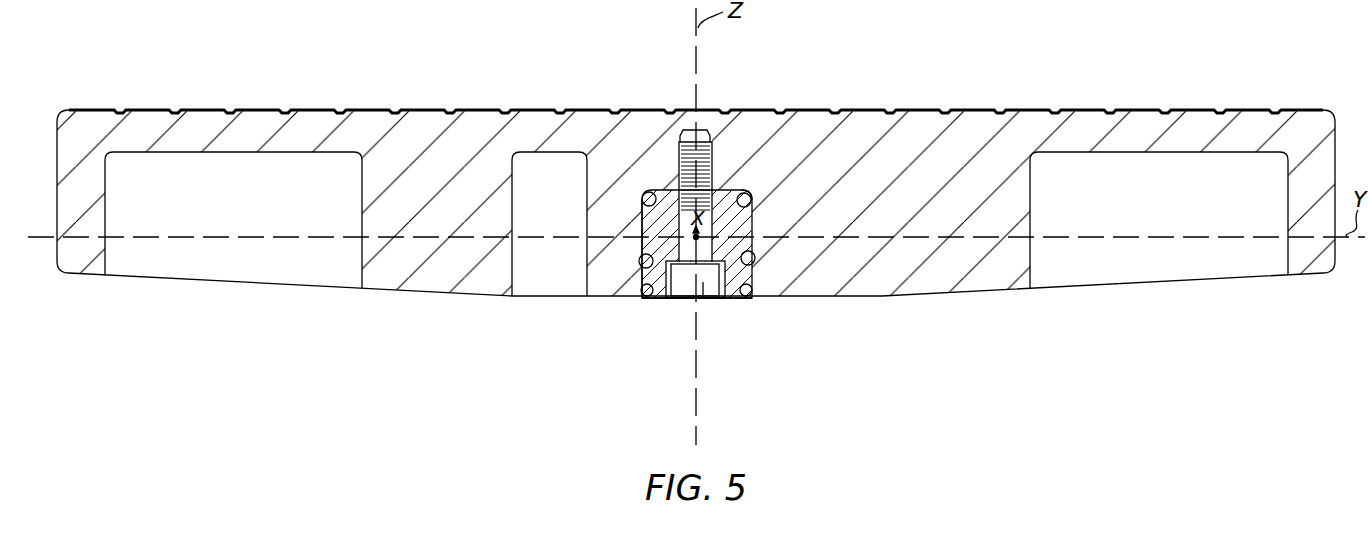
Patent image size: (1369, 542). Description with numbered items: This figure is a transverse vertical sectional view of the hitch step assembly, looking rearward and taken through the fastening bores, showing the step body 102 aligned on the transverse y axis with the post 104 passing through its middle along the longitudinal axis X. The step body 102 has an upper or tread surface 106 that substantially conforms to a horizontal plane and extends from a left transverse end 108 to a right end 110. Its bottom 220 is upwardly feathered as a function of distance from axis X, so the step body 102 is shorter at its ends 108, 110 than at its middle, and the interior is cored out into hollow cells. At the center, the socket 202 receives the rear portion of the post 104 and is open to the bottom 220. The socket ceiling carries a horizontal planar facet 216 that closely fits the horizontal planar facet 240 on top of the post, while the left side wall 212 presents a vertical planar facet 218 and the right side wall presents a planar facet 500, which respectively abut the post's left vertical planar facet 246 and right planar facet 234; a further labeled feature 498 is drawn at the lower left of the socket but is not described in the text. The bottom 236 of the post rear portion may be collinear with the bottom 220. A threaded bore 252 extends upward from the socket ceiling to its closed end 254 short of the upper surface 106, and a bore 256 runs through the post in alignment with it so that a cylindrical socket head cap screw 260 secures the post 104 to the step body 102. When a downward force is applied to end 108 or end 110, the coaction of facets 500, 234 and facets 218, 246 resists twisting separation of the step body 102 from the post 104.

The step body 102 is at (960, 104).
The post 104 is at (681, 362).
The upper surface 106 is at (478, 110).
The left transverse end 108 is at (1334, 131).
The right end 110 is at (58, 131).
The socket 202 is at (753, 208).
The left side wall 212 is at (735, 299).
The planar facet 216 is at (641, 200).
The vertical planar facet 218 is at (756, 270).
The bottom 220 is at (912, 299).
The planar facet 234 is at (641, 220).
The bottom 236 is at (739, 300).
The horizontal planar facet 240 is at (726, 191).
The vertical planar facet 246 is at (755, 224).
The threaded bore 252 is at (714, 150).
The closed end 254 is at (690, 128).
The bore 256 is at (680, 303).
The cylindrical socket head cap screw 260 is at (708, 303).
The lower left seal 498 is at (651, 303).
The planar facet 500 is at (648, 267).